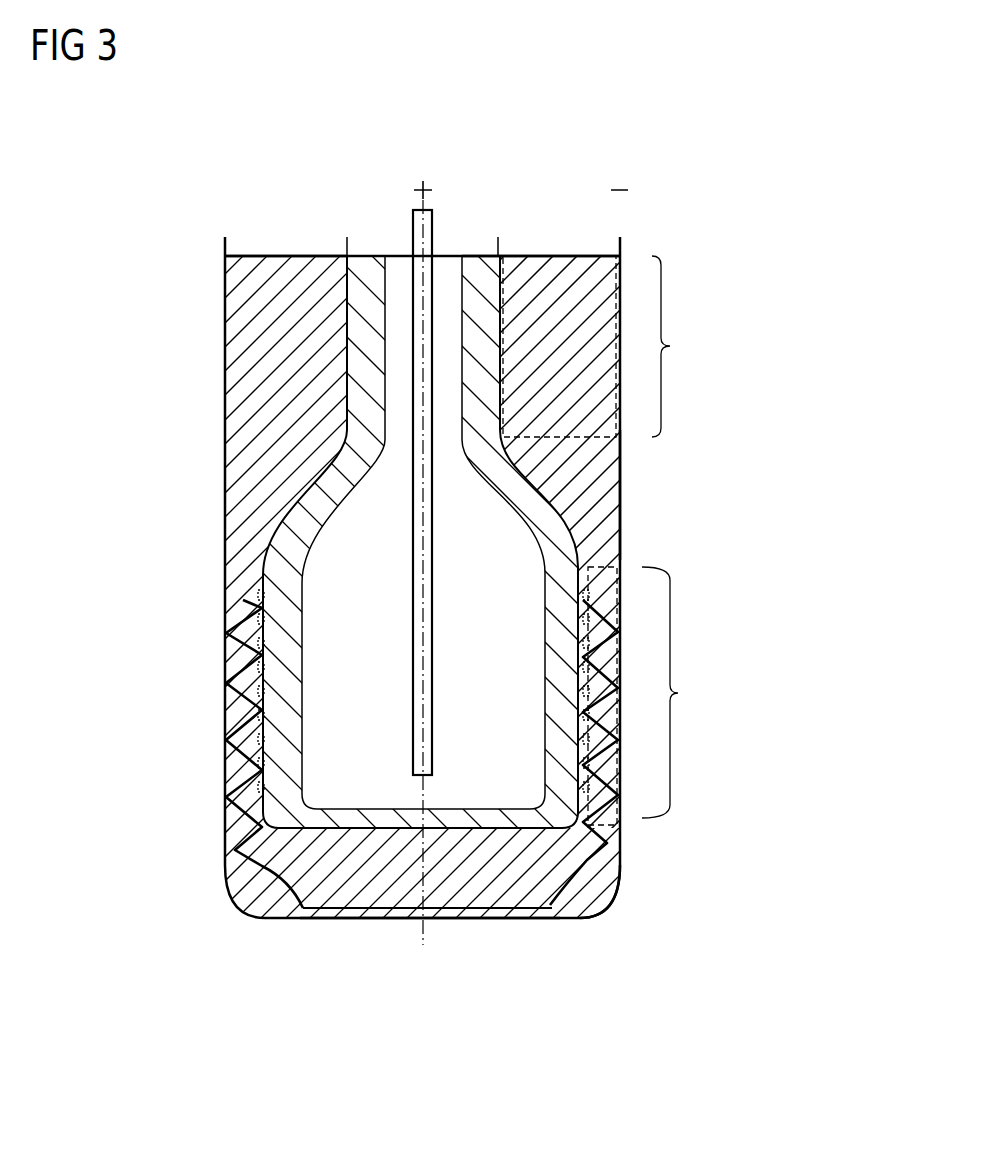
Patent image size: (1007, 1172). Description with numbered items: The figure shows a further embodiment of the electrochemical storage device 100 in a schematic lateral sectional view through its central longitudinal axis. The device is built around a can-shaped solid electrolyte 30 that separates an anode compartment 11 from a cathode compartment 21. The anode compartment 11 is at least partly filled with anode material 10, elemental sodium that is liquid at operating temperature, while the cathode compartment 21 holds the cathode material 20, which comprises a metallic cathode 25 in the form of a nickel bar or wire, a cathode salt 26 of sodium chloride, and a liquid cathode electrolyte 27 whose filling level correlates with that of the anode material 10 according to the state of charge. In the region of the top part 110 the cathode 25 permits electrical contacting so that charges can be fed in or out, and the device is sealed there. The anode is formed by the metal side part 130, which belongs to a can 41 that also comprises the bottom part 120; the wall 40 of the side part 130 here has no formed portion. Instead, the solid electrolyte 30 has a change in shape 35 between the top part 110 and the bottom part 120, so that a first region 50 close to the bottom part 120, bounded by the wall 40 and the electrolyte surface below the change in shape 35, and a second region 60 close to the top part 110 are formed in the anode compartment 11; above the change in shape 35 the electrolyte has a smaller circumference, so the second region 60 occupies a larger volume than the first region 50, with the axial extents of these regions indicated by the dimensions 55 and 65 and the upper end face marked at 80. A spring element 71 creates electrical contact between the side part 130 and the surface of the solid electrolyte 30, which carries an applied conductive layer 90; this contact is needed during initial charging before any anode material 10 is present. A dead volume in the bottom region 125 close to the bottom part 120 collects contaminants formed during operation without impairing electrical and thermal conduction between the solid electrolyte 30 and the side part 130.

The anode material 10 is at (225, 380).
The anode compartment 11 is at (269, 325).
The cathode material 20 is at (413, 218).
The cathode compartment 21 is at (504, 695).
The cathode 25 is at (447, 264).
The cathode salt 26 is at (520, 581).
The cathode electrolyte 27 is at (478, 270).
The solid electrolyte 30 is at (500, 258).
The change in shape 35 is at (297, 514).
The wall 40 is at (620, 454).
The can 41 is at (600, 908).
The first region 50 is at (590, 567).
The connection length 55 is at (675, 692).
The second region 60 is at (612, 257).
The upper region length 65 is at (675, 346).
The spring element 71 is at (226, 830).
The end face 80 is at (268, 256).
The conductive layer 90 is at (620, 760).
The electrochemical storage device 100 is at (772, 172).
The top part 110 is at (170, 232).
The bottom part 120 is at (214, 965).
The bottom region 125 is at (520, 897).
The side part 130 is at (192, 663).